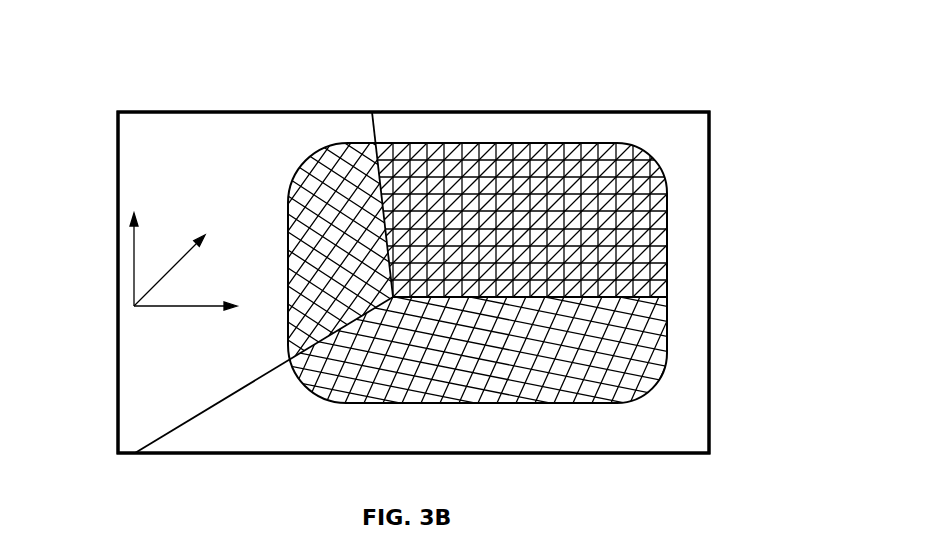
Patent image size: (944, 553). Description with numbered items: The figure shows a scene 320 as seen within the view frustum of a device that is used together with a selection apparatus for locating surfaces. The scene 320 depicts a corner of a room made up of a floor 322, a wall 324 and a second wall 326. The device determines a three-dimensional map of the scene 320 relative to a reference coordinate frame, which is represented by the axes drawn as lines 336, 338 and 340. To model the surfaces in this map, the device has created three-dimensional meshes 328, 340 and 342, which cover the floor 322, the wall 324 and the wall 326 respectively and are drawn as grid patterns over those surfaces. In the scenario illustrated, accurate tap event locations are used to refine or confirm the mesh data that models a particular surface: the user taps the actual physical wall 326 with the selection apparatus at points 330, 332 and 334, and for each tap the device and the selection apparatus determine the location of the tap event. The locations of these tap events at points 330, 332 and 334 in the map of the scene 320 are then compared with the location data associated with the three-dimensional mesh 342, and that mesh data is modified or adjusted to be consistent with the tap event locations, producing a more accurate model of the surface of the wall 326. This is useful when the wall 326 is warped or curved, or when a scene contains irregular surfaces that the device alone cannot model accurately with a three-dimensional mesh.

The scene 320 is at (712, 70).
The floor 322 is at (223, 432).
The wall 324 is at (158, 168).
The wall 326 is at (667, 143).
The 3-D mesh 328 is at (615, 347).
The point 330 is at (411, 199).
The point 332 is at (470, 206).
The point 334 is at (523, 244).
The line 336 is at (134, 258).
The line 338 is at (170, 270).
The line / 3-D mesh 340 is at (313, 199).
The 3-D mesh 342 is at (641, 270).